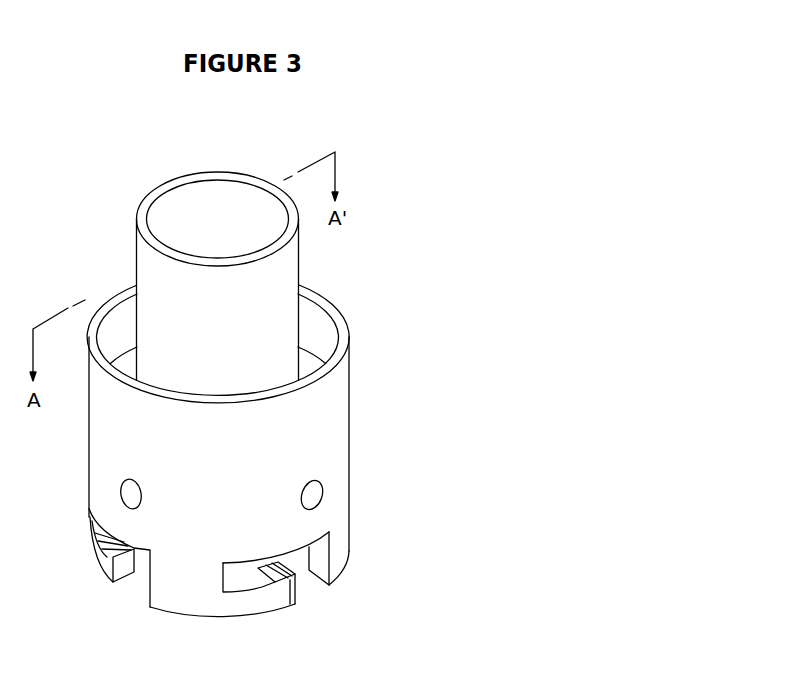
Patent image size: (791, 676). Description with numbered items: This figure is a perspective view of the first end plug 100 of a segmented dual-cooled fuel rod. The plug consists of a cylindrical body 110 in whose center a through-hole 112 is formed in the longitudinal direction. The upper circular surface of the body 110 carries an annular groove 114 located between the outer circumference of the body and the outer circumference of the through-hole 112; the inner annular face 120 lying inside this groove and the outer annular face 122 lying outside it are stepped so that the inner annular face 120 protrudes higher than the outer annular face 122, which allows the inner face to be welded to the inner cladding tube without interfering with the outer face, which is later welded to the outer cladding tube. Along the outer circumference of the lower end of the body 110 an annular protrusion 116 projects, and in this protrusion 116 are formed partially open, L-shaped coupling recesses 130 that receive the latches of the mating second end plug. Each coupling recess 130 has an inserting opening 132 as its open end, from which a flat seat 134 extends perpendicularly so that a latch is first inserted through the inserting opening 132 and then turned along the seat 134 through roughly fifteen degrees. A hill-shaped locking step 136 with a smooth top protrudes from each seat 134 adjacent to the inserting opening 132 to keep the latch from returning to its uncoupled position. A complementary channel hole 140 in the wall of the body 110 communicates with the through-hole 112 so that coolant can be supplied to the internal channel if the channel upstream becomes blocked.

The first end plug 100 is at (398, 201).
The cylindrical body 110 is at (337, 417).
The through-hole 112 is at (161, 229).
The annular groove 114 is at (312, 312).
The annular protrusion 116 is at (342, 518).
The inner annular face 120 is at (170, 181).
The outer annular face 122 is at (345, 322).
The coupling recess 130 is at (327, 619).
The inserting opening 132 is at (314, 585).
The seat 134 is at (245, 580).
The locking step 136 is at (292, 583).
The complementary channel hole 140 is at (130, 492).